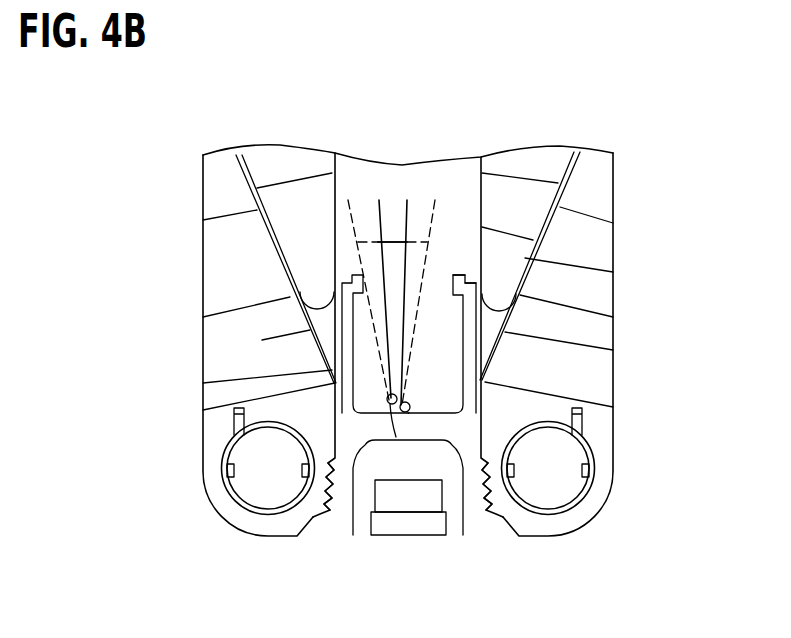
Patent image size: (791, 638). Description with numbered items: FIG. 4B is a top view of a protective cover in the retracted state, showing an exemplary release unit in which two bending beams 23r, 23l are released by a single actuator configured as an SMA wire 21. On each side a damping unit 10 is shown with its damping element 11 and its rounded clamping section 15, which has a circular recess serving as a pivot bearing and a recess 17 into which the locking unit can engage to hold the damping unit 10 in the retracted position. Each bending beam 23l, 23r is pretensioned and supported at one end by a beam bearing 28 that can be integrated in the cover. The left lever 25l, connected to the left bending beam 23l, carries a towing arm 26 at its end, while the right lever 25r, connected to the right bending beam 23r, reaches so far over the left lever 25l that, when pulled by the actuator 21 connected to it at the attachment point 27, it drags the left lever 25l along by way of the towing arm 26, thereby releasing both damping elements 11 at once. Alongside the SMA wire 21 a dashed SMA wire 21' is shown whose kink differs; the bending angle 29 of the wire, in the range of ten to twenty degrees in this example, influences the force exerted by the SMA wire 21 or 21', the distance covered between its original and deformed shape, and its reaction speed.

The damping unit 10 is at (626, 436).
The damping element 11 is at (588, 178).
The clamping section 15 is at (603, 468).
The recess 17 is at (312, 502).
The SMA wire 21 is at (264, 318).
The dashed SMA wire 21' is at (276, 302).
The left bending beam 23l is at (344, 369).
The right bending beam 23r is at (478, 366).
The left lever 25l is at (358, 432).
The right lever 25r is at (457, 432).
The towing arm 26 is at (409, 412).
The attachment point 27 is at (343, 395).
The beam bearing 28 is at (465, 277).
The bending angle 29 is at (390, 242).